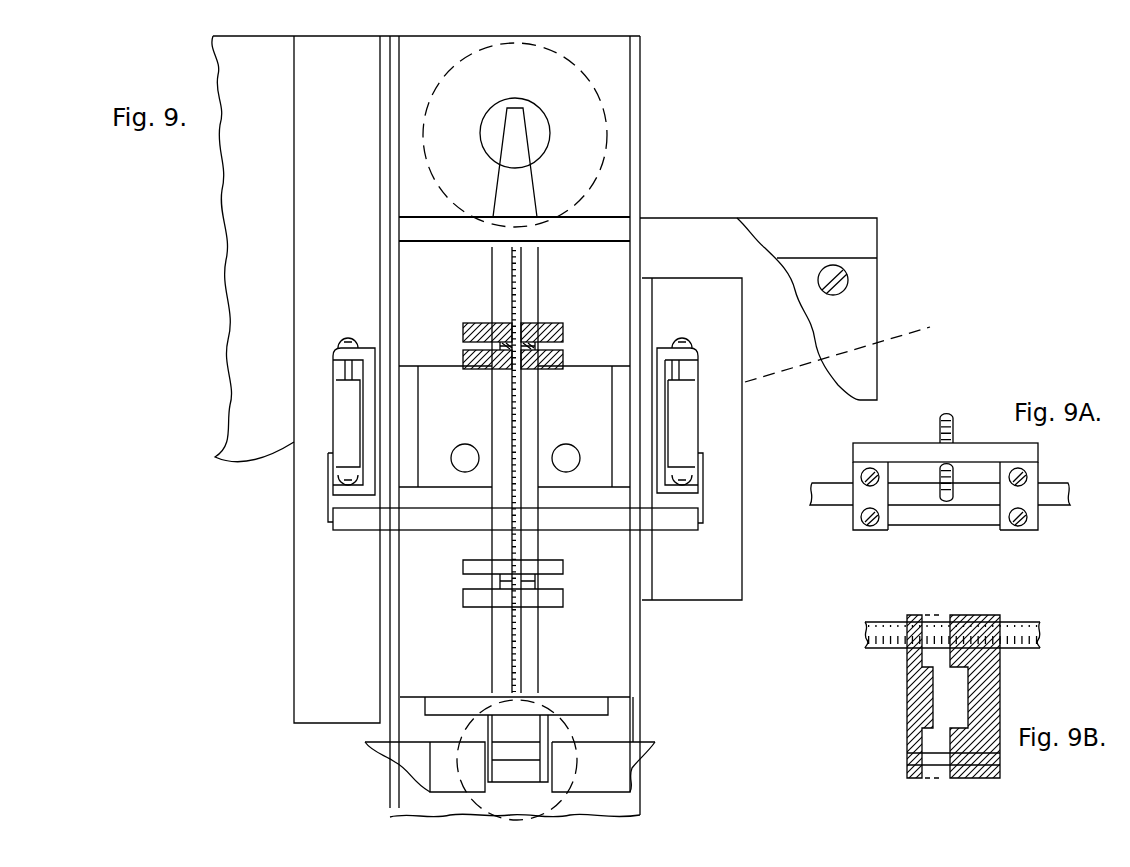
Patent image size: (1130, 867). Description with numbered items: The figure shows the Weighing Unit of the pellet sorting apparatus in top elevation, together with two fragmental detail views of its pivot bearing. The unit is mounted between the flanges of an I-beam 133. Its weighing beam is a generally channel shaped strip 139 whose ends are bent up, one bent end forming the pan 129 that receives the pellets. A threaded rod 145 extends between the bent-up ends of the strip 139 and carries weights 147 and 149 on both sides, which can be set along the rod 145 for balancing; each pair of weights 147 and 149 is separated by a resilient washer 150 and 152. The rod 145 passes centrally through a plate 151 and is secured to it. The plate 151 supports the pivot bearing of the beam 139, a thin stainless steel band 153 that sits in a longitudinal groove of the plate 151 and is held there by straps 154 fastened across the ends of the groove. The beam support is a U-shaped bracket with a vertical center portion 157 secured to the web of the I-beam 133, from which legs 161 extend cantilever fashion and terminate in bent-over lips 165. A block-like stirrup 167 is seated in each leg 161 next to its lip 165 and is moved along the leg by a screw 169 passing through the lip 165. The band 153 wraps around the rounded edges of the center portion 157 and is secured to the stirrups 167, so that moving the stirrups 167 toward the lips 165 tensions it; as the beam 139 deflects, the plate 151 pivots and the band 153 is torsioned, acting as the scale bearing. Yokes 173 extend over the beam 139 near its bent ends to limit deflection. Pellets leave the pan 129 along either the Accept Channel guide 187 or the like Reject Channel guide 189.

In FIG. 9, the pan 129 is at (530, 745).
In FIG. 9, the I-beam 133 is at (641, 108).
In FIG. 9, the channel shaped strip 139 is at (530, 663).
In FIG. 9, the threaded rod 145 is at (522, 645).
In FIG. 9A, the threaded rod 145 is at (955, 428).
In FIG. 9B, the threaded rod 145 is at (1030, 622).
In FIG. 9, the weights 147 is at (470, 565).
In FIG. 9, the weights 149 is at (488, 323).
In FIG. 9, the resilient washer 150 is at (500, 583).
In FIG. 9A, the plate 151 is at (985, 553).
In FIG. 9B, the plate 151 is at (895, 746).
In FIG. 9, the resilient washer 152 is at (500, 346).
In FIG. 9A, the band 153 is at (1050, 498).
In FIG. 9B, the band 153 is at (970, 688).
In FIG. 9A, the straps 154 is at (855, 475).
In FIG. 9B, the straps 154 is at (906, 688).
In FIG. 9, the center portion 157 is at (655, 520).
In FIG. 9, the legs 161 is at (370, 412).
In FIG. 9, the lips 165 is at (690, 352).
In FIG. 9, the stirrups 167 is at (336, 412).
In FIG. 9, the screw 169 is at (345, 368).
In FIG. 9, the yokes 173 is at (605, 222).
In FIG. 9, the guide 187 is at (402, 756).
In FIG. 9, the guide 189 is at (625, 762).